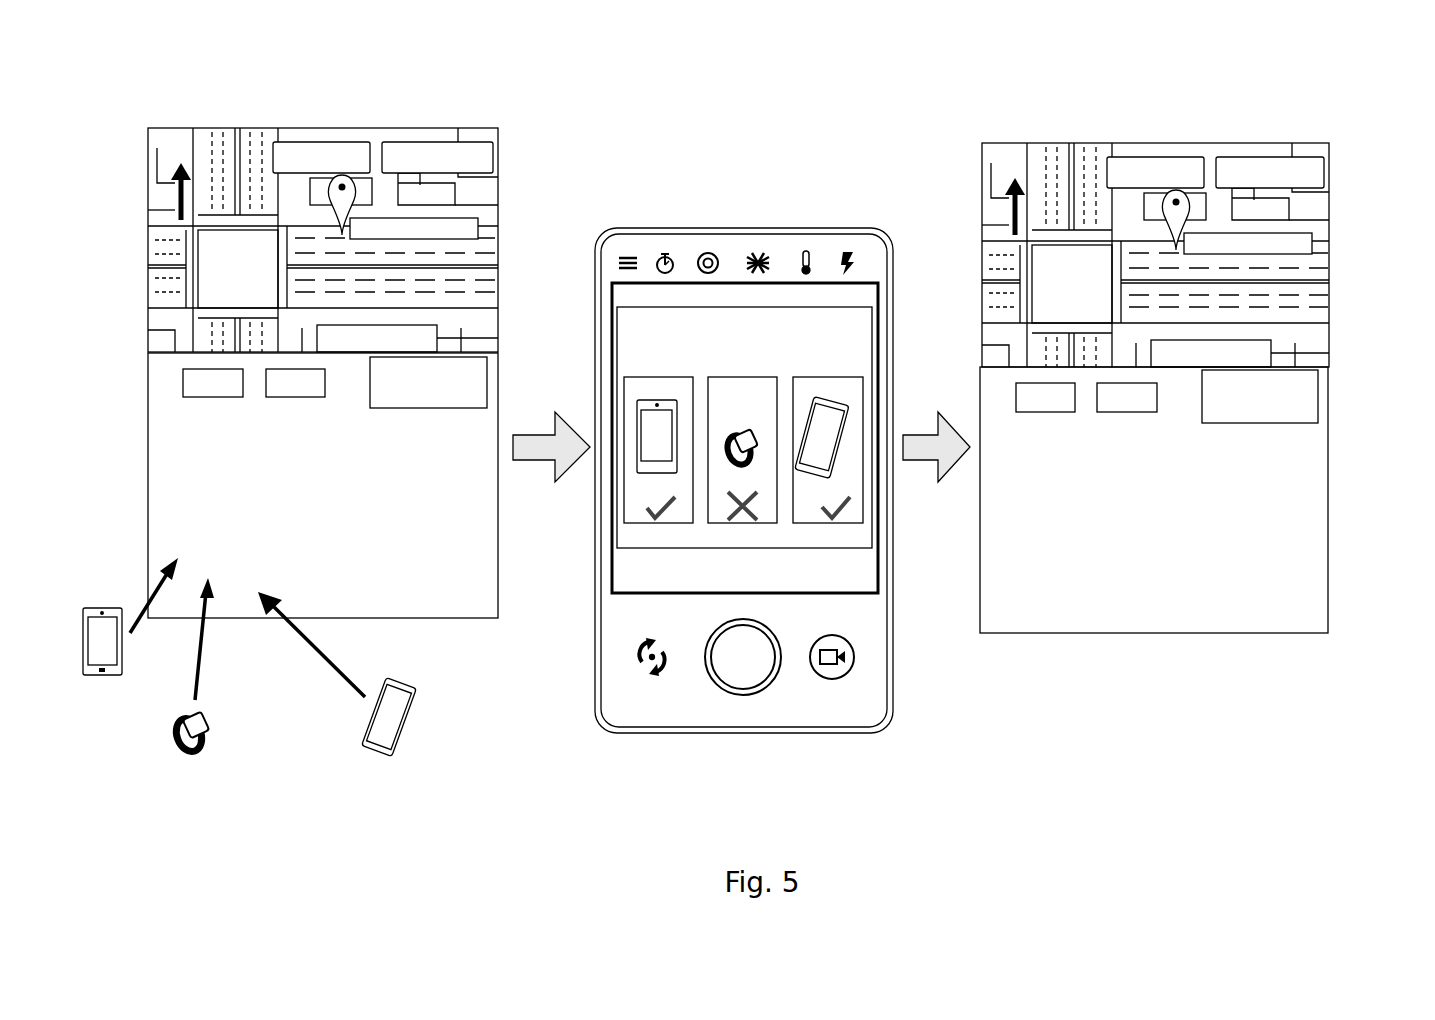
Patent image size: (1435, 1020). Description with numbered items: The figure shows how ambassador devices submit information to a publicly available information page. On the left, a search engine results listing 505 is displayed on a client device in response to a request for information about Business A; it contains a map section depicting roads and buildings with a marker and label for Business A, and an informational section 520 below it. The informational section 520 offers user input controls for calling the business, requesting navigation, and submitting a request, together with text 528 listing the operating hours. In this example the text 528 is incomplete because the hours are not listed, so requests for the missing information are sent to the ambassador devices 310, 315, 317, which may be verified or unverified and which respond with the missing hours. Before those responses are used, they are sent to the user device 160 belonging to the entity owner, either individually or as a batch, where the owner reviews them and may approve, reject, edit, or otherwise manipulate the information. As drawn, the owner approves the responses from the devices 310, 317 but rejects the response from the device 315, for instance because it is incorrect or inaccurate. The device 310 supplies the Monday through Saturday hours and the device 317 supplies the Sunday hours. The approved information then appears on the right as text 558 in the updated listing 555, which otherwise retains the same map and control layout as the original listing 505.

The search engine results listing 505 is at (130, 102).
The informational section 520 is at (147, 423).
The text 528 is at (176, 500).
The ambassador device 310 is at (88, 677).
The ambassador device 315 is at (178, 755).
The ambassador device 317 is at (368, 742).
The user device 160 is at (736, 228).
The updated listing 555 is at (1060, 112).
The text 558 is at (1093, 590).